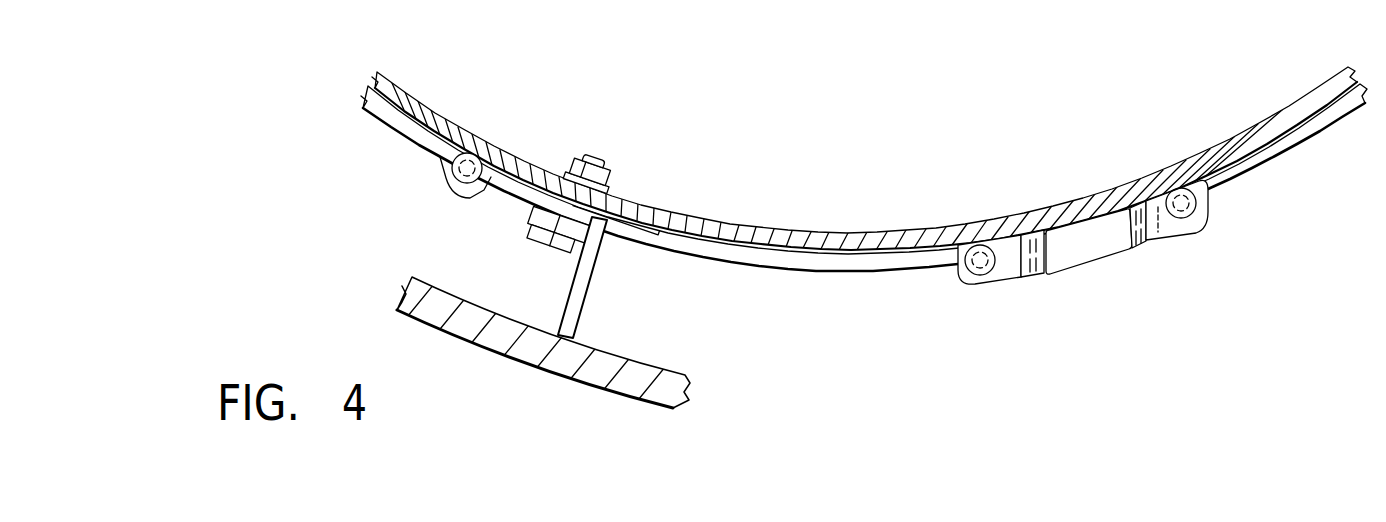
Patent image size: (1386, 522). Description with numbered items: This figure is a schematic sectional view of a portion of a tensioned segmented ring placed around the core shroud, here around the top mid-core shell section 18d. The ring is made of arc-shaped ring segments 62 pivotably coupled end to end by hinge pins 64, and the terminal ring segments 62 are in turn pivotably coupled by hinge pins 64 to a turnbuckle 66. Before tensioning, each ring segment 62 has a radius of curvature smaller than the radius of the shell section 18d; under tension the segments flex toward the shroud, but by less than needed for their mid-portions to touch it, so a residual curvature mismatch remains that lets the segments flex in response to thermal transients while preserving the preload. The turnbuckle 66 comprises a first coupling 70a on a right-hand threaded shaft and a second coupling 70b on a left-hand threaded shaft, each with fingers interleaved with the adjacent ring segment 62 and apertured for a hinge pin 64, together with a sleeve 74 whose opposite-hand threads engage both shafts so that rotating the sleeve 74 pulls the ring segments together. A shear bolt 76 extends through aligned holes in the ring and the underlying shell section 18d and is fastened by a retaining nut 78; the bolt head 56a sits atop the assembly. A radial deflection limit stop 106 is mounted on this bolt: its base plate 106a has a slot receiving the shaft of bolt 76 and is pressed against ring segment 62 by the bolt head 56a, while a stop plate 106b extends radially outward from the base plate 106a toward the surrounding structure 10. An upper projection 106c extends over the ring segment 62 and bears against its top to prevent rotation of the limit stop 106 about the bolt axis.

The tank wall 10 is at (456, 338).
The top mid-core shell section 18d is at (777, 230).
The ring segment 62 is at (388, 120).
The hinge pin 64 is at (447, 176).
The turnbuckle 66 is at (1103, 263).
The first coupling 70a is at (1013, 281).
The second coupling 70b is at (1170, 241).
The sleeve 74 is at (1106, 262).
The bolt 56a is at (590, 168).
The retaining nut 78 is at (586, 183).
The shear bolt 76 is at (551, 239).
The radial deflection limit stop 106 is at (594, 226).
The base plate 106a is at (564, 226).
The stop plate 106b is at (558, 342).
The upper projection 106c is at (616, 218).